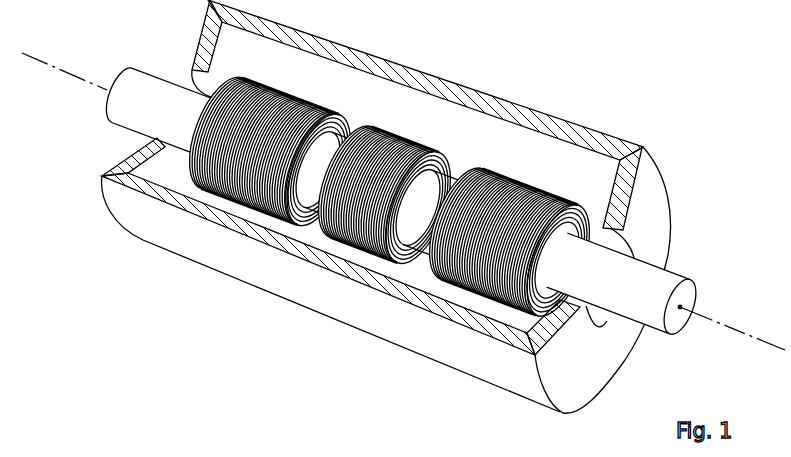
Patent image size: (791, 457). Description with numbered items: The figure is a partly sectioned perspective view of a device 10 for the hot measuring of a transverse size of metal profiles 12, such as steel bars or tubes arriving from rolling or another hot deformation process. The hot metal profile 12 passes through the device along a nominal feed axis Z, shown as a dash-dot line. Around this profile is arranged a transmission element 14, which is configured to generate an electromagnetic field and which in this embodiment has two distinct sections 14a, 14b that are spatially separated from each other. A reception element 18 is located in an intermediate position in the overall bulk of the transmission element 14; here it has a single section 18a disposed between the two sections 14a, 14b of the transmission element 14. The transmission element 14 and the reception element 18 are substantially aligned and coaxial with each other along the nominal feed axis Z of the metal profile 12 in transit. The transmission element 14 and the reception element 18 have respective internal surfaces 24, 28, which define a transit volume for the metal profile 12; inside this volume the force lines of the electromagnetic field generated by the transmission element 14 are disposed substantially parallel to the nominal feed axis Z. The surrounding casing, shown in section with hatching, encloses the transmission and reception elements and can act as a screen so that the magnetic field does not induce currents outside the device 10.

The measuring device 10 is at (702, 119).
The metal profile 12 is at (143, 90).
The transmission element 14 is at (486, 296).
The first section of transmission element 14a is at (226, 178).
The second section of transmission element 14b is at (480, 287).
The reception element 18 is at (349, 248).
The section of reception element 18a is at (357, 238).
The internal surface of transmission element 24 is at (330, 124).
The internal surface of reception element 28 is at (433, 158).
The nominal feed axis Z is at (748, 334).